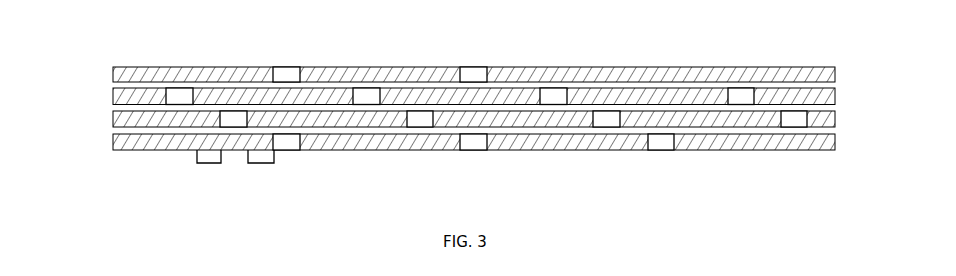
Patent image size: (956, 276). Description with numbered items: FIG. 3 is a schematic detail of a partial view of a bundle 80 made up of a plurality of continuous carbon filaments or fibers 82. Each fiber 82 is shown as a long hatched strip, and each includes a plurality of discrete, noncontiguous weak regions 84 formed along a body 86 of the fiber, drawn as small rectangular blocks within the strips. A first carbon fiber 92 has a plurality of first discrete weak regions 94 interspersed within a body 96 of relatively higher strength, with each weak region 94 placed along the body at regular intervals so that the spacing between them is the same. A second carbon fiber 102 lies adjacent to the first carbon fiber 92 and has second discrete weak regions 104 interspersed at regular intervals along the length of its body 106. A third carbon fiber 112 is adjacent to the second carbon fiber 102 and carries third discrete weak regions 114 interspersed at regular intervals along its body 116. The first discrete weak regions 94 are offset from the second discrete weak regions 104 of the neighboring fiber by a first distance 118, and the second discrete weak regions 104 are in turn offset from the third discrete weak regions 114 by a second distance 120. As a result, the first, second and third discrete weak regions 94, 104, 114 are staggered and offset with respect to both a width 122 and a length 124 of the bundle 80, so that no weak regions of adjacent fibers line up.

The bundle 80 is at (150, 50).
The continuous carbon fibers 82 is at (835, 70).
The discrete weak regions 84 is at (286, 66).
The body 86 is at (365, 67).
The first carbon fiber 92 is at (113, 135).
The first discrete weak regions 94 is at (286, 140).
The body of first carbon fiber 96 is at (382, 140).
The second carbon fiber 102 is at (113, 112).
The second discrete weak regions 104 is at (232, 120).
The body of second carbon fiber 106 is at (487, 120).
The third carbon fiber 112 is at (113, 89).
The third discrete weak regions 114 is at (180, 97).
The body of third carbon fiber 116 is at (422, 97).
The first distance 118 is at (262, 163).
The second distance 120 is at (210, 163).
The width 122 is at (43, 78).
The length 124 is at (108, 202).